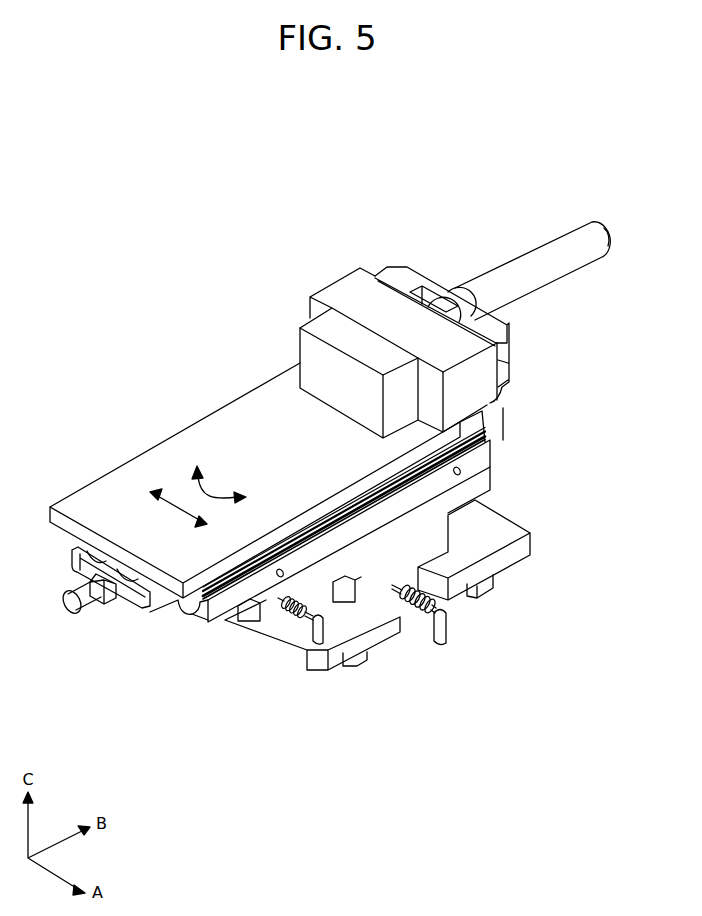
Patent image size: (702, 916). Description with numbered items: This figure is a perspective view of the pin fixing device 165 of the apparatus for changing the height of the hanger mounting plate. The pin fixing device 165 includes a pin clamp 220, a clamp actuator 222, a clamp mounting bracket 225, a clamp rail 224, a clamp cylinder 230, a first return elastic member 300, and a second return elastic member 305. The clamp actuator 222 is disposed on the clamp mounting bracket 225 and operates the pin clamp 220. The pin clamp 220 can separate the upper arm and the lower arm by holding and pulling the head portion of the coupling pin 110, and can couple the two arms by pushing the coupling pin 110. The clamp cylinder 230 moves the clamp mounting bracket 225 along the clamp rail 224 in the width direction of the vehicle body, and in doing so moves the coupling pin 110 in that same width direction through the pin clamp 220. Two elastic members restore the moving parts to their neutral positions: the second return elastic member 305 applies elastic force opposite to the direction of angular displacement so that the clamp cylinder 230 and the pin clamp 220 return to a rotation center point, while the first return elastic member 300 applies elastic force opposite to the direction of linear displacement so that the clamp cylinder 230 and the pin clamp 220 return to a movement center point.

The coupling pin 110 is at (541, 262).
The pin fixing device 165 is at (128, 222).
The pin clamp 220 is at (510, 326).
The clamp actuator 222 is at (487, 373).
The clamp rail 224 is at (70, 548).
The clamp mounting bracket 225 is at (127, 470).
The clamp cylinder 230 is at (203, 615).
The first return elastic member 300 is at (413, 608).
The second return elastic member 305 is at (288, 611).